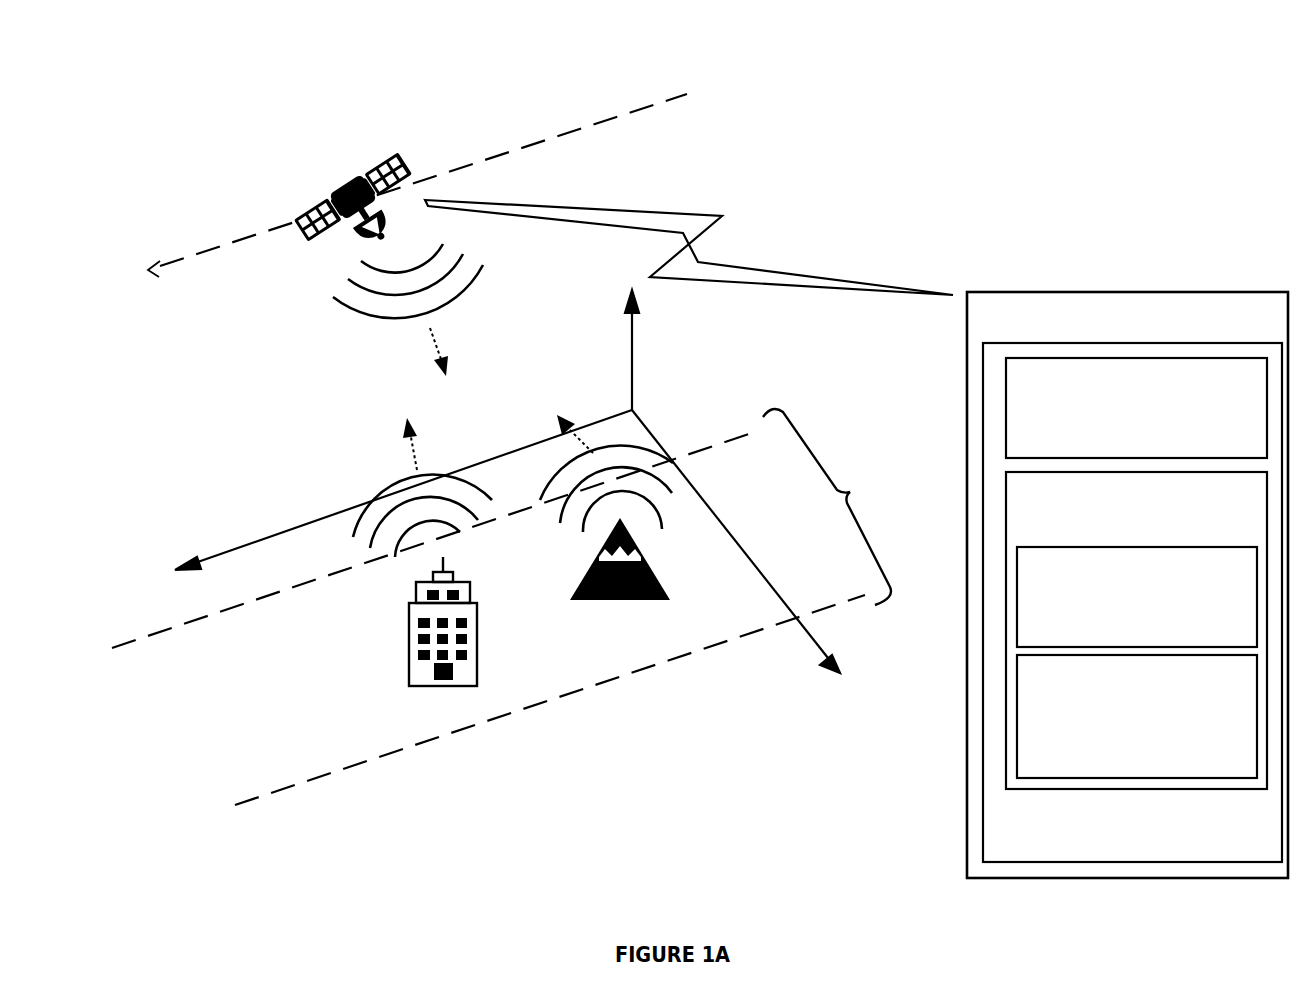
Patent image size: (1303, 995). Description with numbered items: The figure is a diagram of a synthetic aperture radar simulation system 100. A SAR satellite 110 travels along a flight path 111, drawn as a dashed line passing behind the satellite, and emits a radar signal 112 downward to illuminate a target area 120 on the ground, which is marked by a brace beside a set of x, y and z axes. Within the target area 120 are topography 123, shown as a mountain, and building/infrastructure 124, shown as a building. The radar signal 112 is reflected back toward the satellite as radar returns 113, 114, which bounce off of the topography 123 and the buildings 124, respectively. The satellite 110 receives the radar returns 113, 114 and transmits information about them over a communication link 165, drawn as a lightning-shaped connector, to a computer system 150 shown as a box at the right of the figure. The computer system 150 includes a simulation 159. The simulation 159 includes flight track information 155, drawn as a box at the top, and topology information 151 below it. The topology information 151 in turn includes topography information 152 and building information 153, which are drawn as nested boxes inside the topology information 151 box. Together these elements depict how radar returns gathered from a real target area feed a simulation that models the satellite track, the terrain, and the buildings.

The system 100 is at (70, 101).
The SAR satellite 110 is at (318, 165).
The flight path 111 is at (668, 100).
The radar signal 112 is at (330, 270).
The radar return 113 is at (658, 438).
The radar return 114 is at (365, 476).
The target area 120 is at (870, 474).
The topography 123 is at (637, 600).
The building/infrastructure 124 is at (477, 660).
The computer system 150 is at (1127, 585).
The topology information 151 is at (1136, 630).
The topography information 152 is at (1137, 597).
The building information 153 is at (1137, 716).
The flight track information 155 is at (1136, 408).
The simulation 159 is at (1130, 825).
The communication link 165 is at (722, 216).